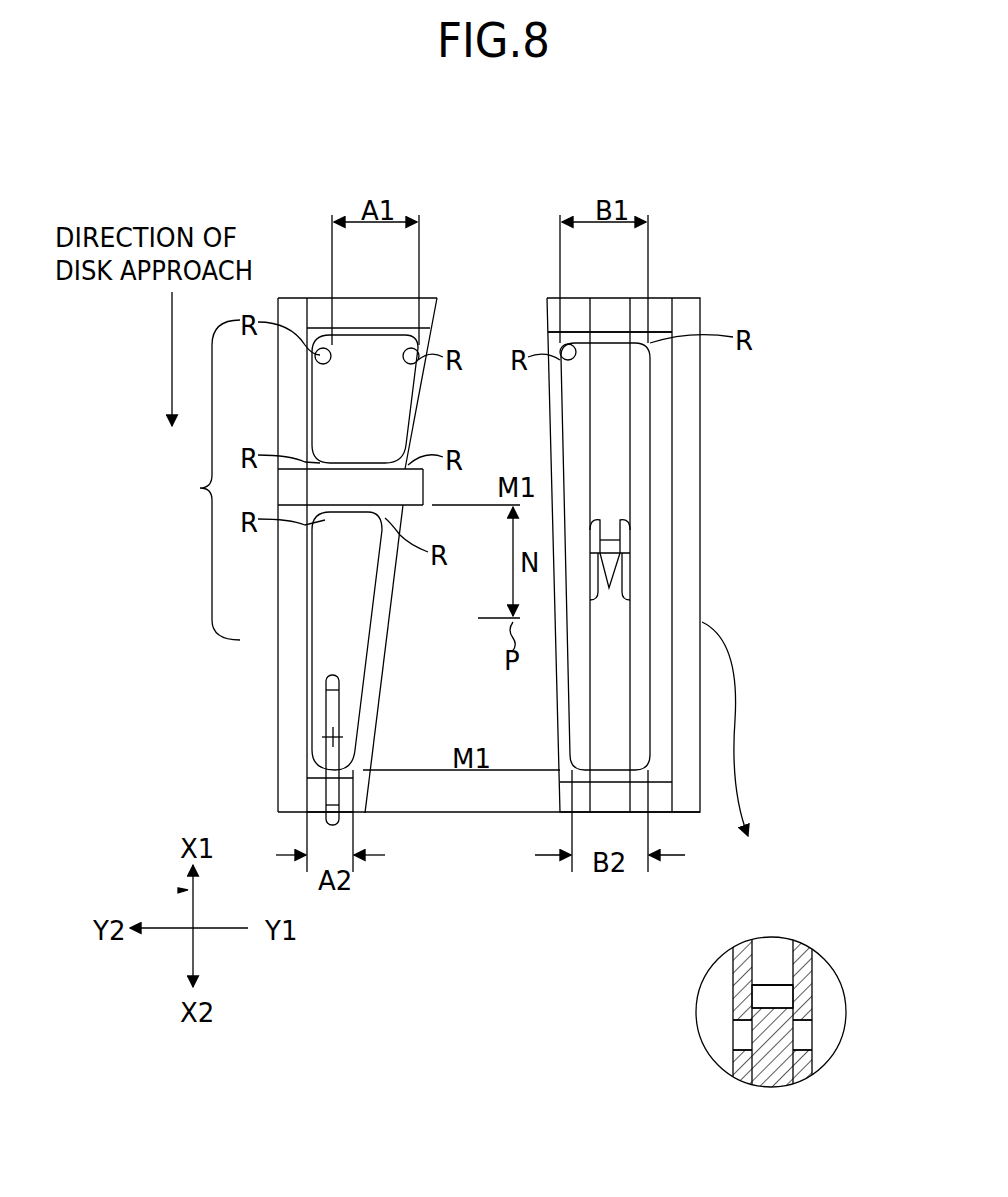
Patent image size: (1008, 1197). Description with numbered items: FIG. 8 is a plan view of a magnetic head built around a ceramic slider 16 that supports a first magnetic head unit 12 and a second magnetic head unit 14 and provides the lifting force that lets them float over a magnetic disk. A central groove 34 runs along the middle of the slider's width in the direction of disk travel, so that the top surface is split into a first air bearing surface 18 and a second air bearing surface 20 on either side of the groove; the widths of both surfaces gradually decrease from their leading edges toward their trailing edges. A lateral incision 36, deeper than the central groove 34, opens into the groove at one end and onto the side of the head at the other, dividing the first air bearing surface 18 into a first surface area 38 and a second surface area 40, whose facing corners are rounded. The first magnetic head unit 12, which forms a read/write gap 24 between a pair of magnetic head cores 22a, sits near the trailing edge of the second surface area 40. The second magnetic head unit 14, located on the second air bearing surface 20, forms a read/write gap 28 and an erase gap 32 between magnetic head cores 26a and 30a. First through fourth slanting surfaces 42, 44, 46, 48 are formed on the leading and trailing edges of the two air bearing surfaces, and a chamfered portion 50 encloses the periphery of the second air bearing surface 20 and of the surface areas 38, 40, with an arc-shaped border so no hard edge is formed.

The first magnetic head unit 12 is at (168, 682).
The second magnetic head unit 14 is at (607, 524).
The slider 16 is at (712, 540).
The first air bearing surface 18 is at (199, 480).
The second air bearing surface 20 is at (642, 400).
The magnetic head cores 22a is at (330, 690).
The R/W gap 24 is at (328, 737).
The magnetic head cores 26a is at (775, 965).
The R/W gap 28 is at (778, 1003).
The magnetic head cores 30a is at (742, 1038).
The E gap 32 is at (737, 1075).
The central groove 34 is at (477, 325).
The lateral incision 36 is at (413, 507).
The first surface area 38 is at (322, 415).
The second surface area 40 is at (325, 600).
The first slanting surface 42 is at (365, 310).
The second slanting surface 44 is at (350, 797).
The third slanting surface 46 is at (640, 312).
The fourth slanting surface 48 is at (575, 795).
The chamfered portion 50 is at (418, 412).